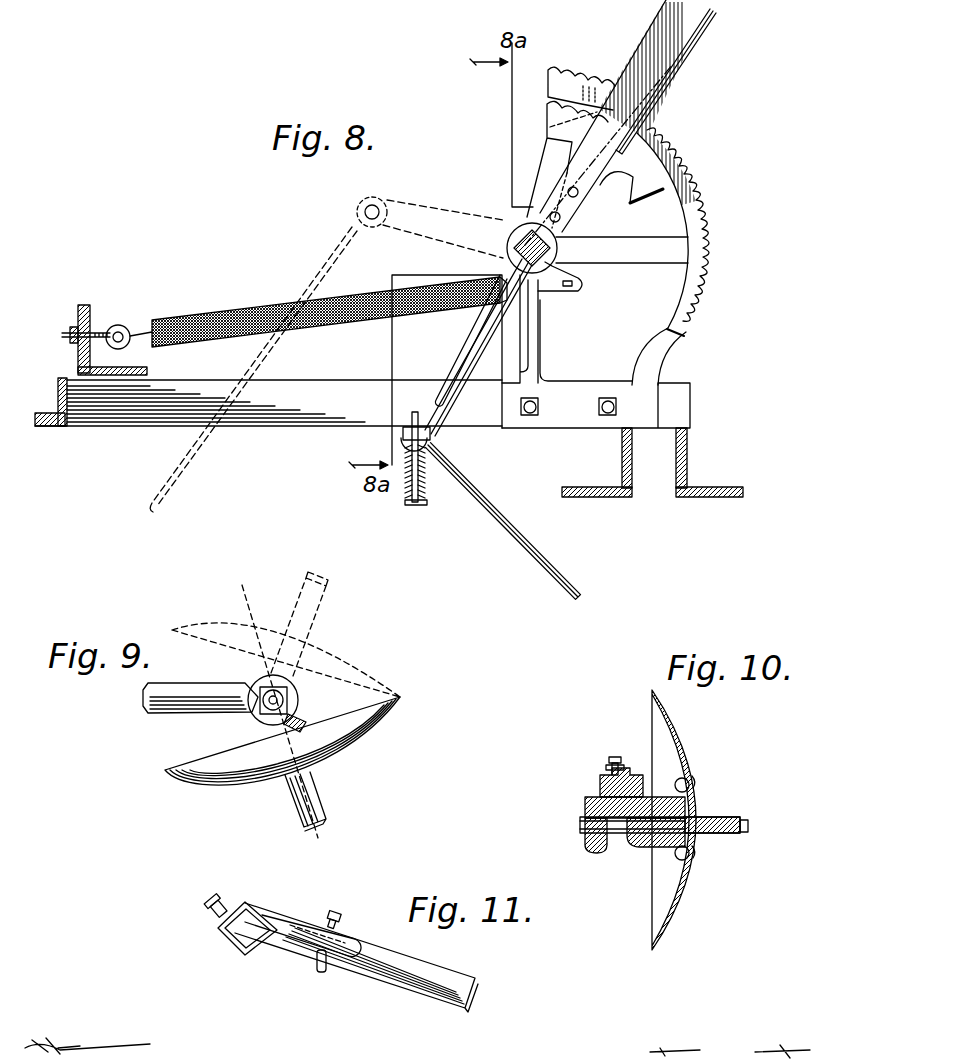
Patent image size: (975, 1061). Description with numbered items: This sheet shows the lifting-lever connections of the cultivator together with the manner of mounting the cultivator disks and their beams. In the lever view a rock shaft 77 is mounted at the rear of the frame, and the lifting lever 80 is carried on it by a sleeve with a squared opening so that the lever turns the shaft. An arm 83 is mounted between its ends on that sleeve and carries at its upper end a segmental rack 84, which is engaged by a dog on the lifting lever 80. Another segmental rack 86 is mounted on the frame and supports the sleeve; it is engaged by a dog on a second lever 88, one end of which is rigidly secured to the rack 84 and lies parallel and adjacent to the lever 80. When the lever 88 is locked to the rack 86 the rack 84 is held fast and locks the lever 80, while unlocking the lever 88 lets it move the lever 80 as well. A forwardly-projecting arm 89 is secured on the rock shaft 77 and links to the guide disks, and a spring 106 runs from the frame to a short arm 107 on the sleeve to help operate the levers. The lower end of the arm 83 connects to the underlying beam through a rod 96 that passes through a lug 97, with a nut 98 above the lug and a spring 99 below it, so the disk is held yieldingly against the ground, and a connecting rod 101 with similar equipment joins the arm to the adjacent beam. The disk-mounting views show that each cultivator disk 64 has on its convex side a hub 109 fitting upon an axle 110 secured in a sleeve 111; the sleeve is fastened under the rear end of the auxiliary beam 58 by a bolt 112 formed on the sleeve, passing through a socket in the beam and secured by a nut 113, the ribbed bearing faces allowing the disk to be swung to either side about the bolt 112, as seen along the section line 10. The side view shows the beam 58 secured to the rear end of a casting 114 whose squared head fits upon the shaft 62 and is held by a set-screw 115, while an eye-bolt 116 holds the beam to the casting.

In FIG. 9, the section line 10- 10 is at (252, 583).
In FIG. 9, the auxiliary beam 58 is at (183, 703).
In FIG. 11, the auxiliary beam 58 is at (427, 983).
In FIG. 11, the shaft 62 is at (247, 940).
In FIG. 9, the cultivator disk 64 is at (383, 713).
In FIG. 10, the cultivator disk 64 is at (675, 735).
In FIG. 8, the rock shaft 77 is at (527, 240).
In FIG. 8, the lifting lever 80 is at (677, 50).
In FIG. 8, the arm 83 is at (453, 350).
In FIG. 8, the segmental rack 84 is at (633, 203).
In FIG. 8, the segmental rack 86 is at (697, 203).
In FIG. 8, the second lever 88 is at (670, 87).
In FIG. 8, the forwardly-projecting arm 89 is at (425, 210).
In FIG. 8, the rod 96 is at (420, 504).
In FIG. 8, the lug 97 is at (435, 425).
In FIG. 8, the nut 98 is at (403, 431).
In FIG. 8, the spring 99 is at (407, 487).
In FIG. 8, the connecting rod 101 is at (500, 510).
In FIG. 8, the spring 106 is at (352, 322).
In FIG. 8, the short arm 107 is at (582, 285).
In FIG. 9, the hub 109 is at (314, 797).
In FIG. 10, the hub 109 is at (720, 810).
In FIG. 10, the axle 110 is at (717, 833).
In FIG. 9, the sleeve 111 is at (300, 723).
In FIG. 10, the sleeve 111 is at (663, 800).
In FIG. 9, the bolt 112 is at (277, 697).
In FIG. 10, the bolt 112 is at (600, 770).
In FIG. 9, the nut 113 is at (265, 710).
In FIG. 10, the nut 113 is at (608, 762).
In FIG. 11, the casting 114 is at (273, 918).
In FIG. 11, the set-screw 115 is at (232, 877).
In FIG. 11, the eye-bolt 116 is at (333, 912).